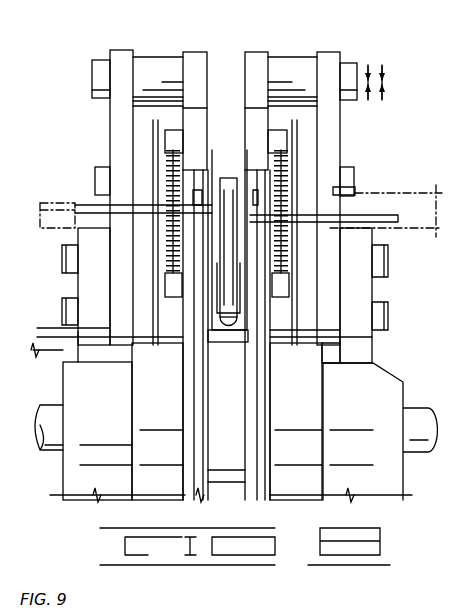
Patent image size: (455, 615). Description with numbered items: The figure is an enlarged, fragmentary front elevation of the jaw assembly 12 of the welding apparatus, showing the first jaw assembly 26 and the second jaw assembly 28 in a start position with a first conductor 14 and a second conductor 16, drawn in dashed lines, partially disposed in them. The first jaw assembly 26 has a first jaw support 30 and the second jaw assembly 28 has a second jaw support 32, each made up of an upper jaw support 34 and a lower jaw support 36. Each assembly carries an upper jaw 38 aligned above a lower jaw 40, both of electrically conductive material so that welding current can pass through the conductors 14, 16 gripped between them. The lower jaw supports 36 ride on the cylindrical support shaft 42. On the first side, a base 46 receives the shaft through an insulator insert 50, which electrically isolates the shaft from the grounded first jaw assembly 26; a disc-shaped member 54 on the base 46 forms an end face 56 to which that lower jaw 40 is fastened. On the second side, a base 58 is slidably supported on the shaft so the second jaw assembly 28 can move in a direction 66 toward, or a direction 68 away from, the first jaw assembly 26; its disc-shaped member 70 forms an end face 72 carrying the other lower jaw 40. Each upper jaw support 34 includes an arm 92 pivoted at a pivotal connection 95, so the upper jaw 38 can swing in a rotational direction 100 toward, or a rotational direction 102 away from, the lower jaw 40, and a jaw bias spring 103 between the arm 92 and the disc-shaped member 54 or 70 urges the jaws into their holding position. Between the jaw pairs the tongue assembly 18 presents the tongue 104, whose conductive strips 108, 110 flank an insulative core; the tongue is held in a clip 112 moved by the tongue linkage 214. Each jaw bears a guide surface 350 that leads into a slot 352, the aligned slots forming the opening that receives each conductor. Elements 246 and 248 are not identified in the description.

The jaw assembly 12 is at (270, 494).
The first conductor 14 is at (90, 210).
The second conductor 16 is at (383, 225).
The tongue assembly 18 is at (225, 158).
The first jaw assembly 26 is at (170, 250).
The second jaw assembly 28 is at (290, 240).
The first jaw support 30 is at (212, 497).
The second jaw support 32 is at (248, 492).
The upper jaw support 34 is at (92, 78).
The lower jaw support 36 is at (182, 383).
The upper jaw 38 is at (172, 155).
The lower jaw 40 is at (195, 260).
The support shaft 42 is at (60, 410).
The base 46 is at (140, 445).
The insulator insert 50 is at (72, 452).
The disc-shaped member 54 is at (200, 416).
The end face 56 is at (210, 487).
The base 58 is at (305, 400).
The direction 66 is at (338, 38).
The direction 68 is at (322, 27).
The disc-shaped member 70 is at (252, 385).
The end face 72 is at (245, 478).
The arm 92 is at (197, 64).
The pivotal connection 95 is at (97, 178).
The rotational direction 100 is at (383, 78).
The rotational direction 102 is at (383, 92).
The jaw bias spring 103 is at (135, 158).
The tongue 104 is at (222, 176).
The conductive strip 108 is at (170, 308).
The conductive strip 110 is at (283, 290).
The clip 112 is at (240, 318).
The tongue linkage 214 is at (55, 352).
The side plate 246 is at (115, 110).
The bolt 248 is at (102, 62).
The guide surface 350 is at (100, 176).
The slot 352 is at (153, 232).